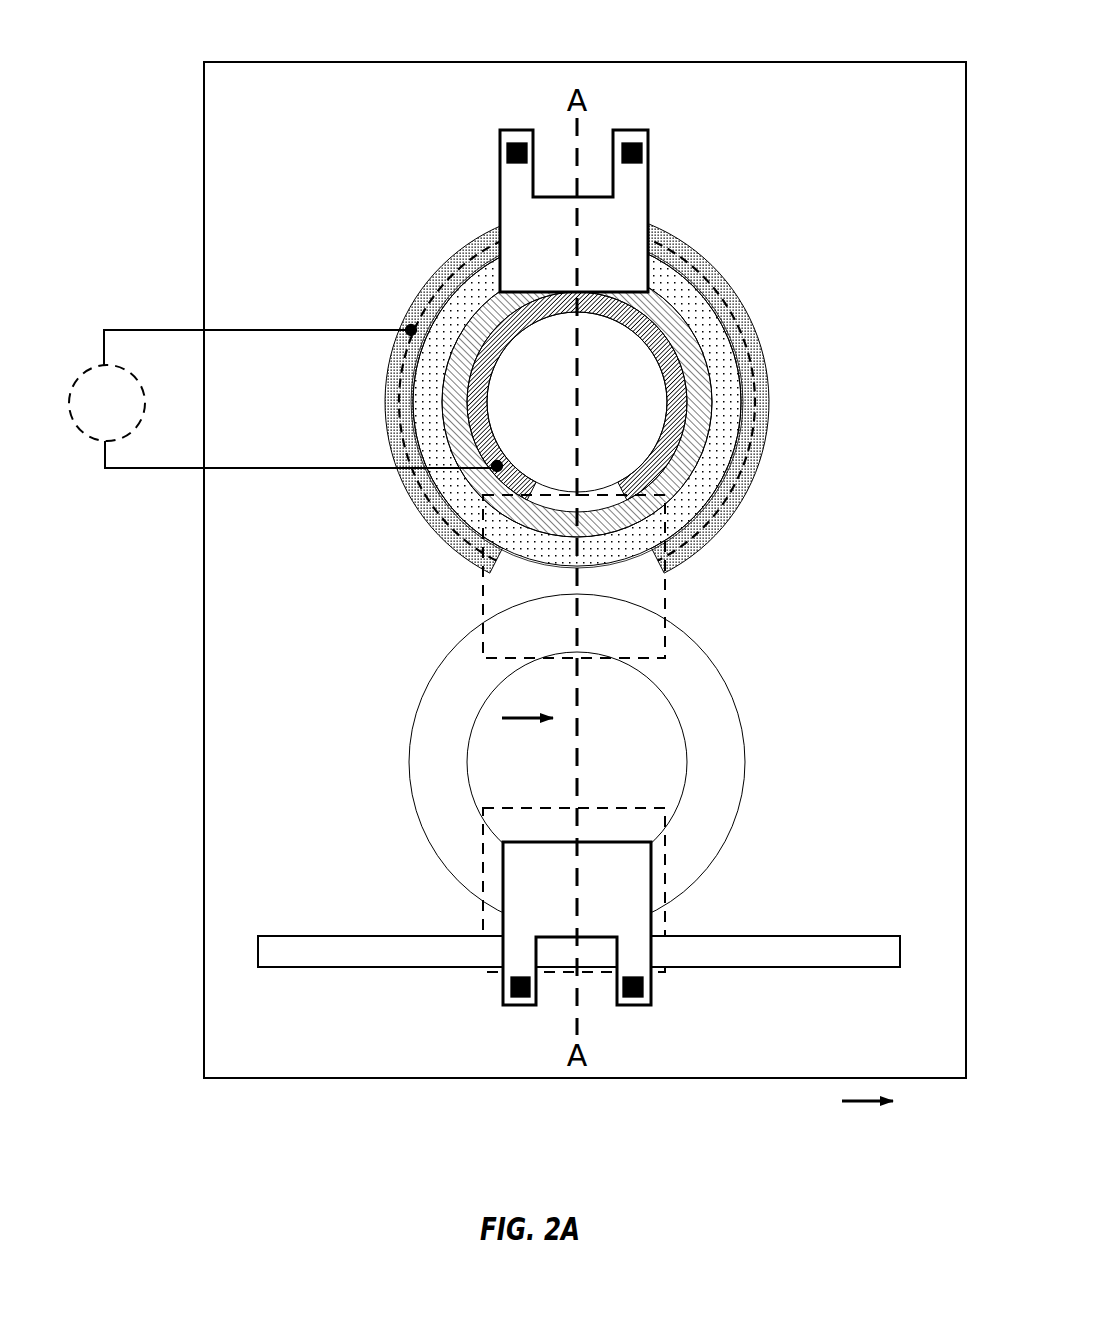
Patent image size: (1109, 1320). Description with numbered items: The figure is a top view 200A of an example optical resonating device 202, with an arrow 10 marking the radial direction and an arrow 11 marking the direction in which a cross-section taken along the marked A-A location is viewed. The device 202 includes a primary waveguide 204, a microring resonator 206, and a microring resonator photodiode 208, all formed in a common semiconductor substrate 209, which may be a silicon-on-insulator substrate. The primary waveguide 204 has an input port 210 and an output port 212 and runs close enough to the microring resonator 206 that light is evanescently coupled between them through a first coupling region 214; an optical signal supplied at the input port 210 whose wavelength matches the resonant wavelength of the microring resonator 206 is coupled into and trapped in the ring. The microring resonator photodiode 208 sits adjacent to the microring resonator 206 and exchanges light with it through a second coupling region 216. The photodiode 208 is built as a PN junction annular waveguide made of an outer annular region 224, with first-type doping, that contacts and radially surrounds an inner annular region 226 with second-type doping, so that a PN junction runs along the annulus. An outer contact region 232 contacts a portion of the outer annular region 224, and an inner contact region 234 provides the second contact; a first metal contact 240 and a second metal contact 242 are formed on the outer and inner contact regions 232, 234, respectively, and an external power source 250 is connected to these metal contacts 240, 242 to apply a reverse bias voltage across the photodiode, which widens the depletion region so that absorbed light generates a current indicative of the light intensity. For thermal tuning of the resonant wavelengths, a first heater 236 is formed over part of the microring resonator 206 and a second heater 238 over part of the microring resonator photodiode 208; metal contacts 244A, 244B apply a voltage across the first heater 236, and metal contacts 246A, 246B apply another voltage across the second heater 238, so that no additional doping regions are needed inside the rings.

The top view 200A is at (897, 25).
The optical resonating device 202 is at (343, 60).
The primary waveguide 204 is at (727, 968).
The microring resonator 206 is at (742, 788).
The microring resonator photodiode 208 is at (740, 338).
The semiconductor substrate 209 is at (290, 613).
The input port 210 is at (257, 948).
The output port 212 is at (902, 945).
The first coupling region 214 is at (590, 806).
The second coupling region 216 is at (666, 602).
The outer annular region 224 is at (690, 303).
The inner annular region 226 is at (482, 322).
The outer contact region 232 is at (768, 408).
The inner contact region 234 is at (512, 343).
The first heater 236 is at (563, 901).
The second heater 238 is at (547, 262).
The first metal contact 240 is at (763, 467).
The second metal contact 242 is at (487, 388).
The metal contact 244A is at (520, 1000).
The metal contact 244B is at (633, 1000).
The metal contact 246A is at (515, 141).
The metal contact 246B is at (632, 141).
The external power source 250 is at (122, 368).
The radial direction 10 is at (858, 1103).
The direction 11 is at (517, 722).